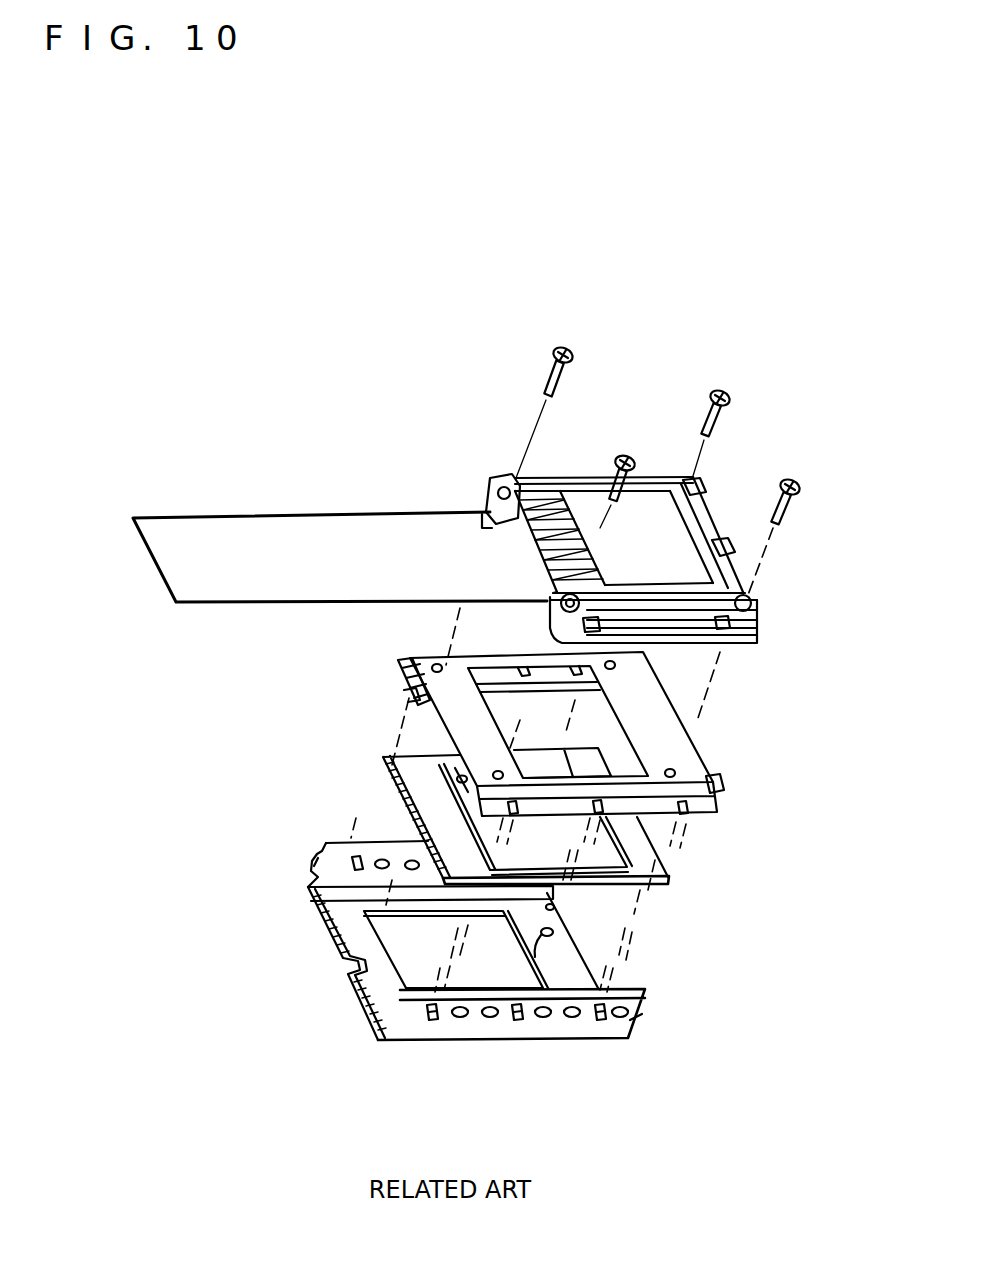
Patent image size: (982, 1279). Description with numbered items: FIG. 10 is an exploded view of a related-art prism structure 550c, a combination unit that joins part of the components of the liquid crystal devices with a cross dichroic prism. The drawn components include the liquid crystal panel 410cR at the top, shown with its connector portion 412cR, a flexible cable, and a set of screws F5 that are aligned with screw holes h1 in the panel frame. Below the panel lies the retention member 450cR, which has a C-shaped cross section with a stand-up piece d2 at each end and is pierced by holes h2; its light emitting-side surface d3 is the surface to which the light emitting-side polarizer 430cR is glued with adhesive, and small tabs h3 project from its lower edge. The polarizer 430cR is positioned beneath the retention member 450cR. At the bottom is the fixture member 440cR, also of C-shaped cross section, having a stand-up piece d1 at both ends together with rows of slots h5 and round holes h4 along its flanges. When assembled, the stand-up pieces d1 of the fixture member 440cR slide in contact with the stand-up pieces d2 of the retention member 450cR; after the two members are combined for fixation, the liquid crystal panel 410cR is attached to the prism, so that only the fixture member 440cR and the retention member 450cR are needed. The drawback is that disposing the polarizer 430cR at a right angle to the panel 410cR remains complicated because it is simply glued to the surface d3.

The prism structure 550c is at (251, 357).
The liquid crystal panel 410cR is at (690, 496).
The connector block 412cR is at (706, 643).
The screws F5 is at (623, 453).
The screw holes of frame h1 is at (497, 478).
The retention member 450cR is at (723, 782).
The holes of plate 450cR h2 is at (499, 771).
The stand-up piece of the retention member d2 is at (400, 664).
The light emitting-side surface d3 is at (402, 698).
The light emitting-side polarizer 430cR is at (380, 762).
The tabs h3 is at (520, 810).
The fixture member 440cR is at (327, 937).
The stand-up piece of the fixture member d1 is at (320, 863).
The slots h5 is at (432, 1020).
The round holes h4 is at (388, 855).